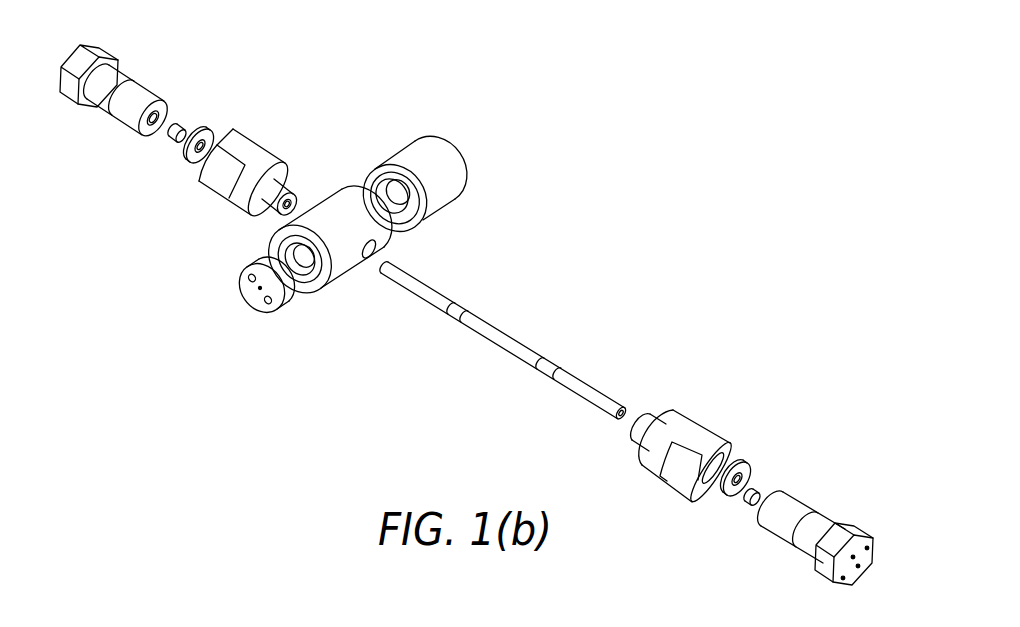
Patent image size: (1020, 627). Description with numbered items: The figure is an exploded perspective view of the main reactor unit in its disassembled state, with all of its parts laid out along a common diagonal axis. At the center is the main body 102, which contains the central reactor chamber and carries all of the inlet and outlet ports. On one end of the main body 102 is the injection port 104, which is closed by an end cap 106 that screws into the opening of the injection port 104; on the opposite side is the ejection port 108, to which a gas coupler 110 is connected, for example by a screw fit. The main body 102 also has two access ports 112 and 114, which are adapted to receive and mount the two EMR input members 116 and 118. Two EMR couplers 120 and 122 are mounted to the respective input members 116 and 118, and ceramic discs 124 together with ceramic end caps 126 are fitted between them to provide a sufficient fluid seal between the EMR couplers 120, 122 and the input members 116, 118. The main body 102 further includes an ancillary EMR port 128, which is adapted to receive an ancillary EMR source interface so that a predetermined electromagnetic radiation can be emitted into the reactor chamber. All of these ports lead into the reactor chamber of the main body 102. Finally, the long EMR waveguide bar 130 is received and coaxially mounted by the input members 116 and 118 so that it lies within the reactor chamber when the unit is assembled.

The main body 102 is at (294, 243).
The injection port 104 is at (227, 293).
The end cap 106 is at (244, 300).
The ejection port 108 is at (438, 168).
The gas coupler 110 is at (421, 145).
The access port 112 is at (324, 243).
The access port 114 is at (371, 262).
The EMR input member 116 is at (255, 142).
The EMR input member 118 is at (697, 427).
The EMR coupler 120 is at (125, 114).
The EMR coupler 122 is at (798, 508).
The ceramic disc 124 is at (200, 130).
The ceramic end cap 126 is at (746, 509).
The ancillary EMR port 128 is at (335, 296).
The EMR waveguide bar 130 is at (509, 337).